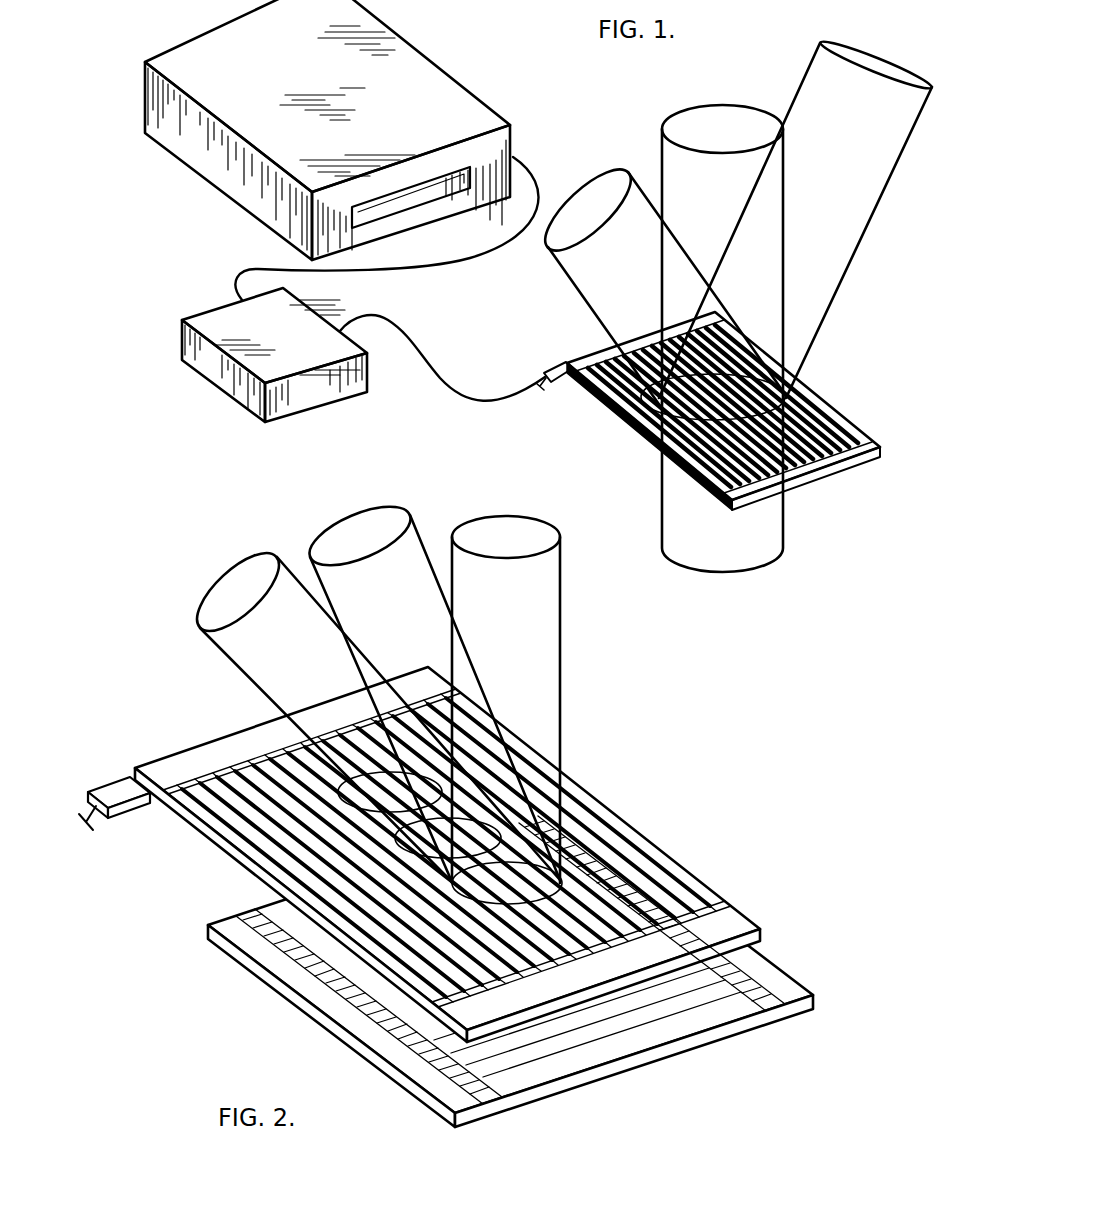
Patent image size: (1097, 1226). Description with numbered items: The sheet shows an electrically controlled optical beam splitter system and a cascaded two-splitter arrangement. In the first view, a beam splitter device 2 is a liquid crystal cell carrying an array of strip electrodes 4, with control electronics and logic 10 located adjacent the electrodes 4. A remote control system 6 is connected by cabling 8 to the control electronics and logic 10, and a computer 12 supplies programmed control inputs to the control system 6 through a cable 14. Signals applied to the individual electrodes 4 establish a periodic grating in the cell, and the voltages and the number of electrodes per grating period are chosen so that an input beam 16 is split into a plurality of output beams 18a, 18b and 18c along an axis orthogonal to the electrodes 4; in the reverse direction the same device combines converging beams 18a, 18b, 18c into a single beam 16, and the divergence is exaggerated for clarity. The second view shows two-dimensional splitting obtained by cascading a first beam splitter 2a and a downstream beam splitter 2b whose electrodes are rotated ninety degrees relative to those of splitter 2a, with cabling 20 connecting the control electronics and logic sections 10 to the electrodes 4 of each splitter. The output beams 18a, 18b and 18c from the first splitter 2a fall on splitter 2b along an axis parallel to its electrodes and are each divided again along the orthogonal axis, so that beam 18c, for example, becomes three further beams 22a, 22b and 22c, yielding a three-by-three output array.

In FIG. 1, the beam splitter device 2 is at (836, 340).
In FIG. 2, the first beam splitter 2a is at (292, 1020).
In FIG. 2, the downstream beam splitter 2b is at (668, 806).
In FIG. 1, the strip electrodes 4 is at (620, 405).
In FIG. 2, the strip electrodes 4 is at (278, 785).
In FIG. 1, the remote control system 6 is at (233, 392).
In FIG. 1, the cabling 8 is at (427, 348).
In FIG. 2, the cabling 8 is at (140, 788).
In FIG. 1, the control electronics and logic 10 is at (842, 452).
In FIG. 2, the control electronics and logic 10 is at (218, 767).
In FIG. 1, the computer 12 is at (204, 150).
In FIG. 1, the cable 14 is at (250, 266).
In FIG. 1, the input beam 16 is at (783, 538).
In FIG. 1, the output beam 18a is at (628, 170).
In FIG. 2, the output beam 18a is at (374, 804).
In FIG. 1, the output beam 18b is at (733, 110).
In FIG. 2, the output beam 18b is at (438, 850).
In FIG. 1, the output beam 18c is at (832, 40).
In FIG. 2, the output beam 18c is at (498, 894).
In FIG. 2, the cabling 20 is at (762, 1002).
In FIG. 2, the output beam 22a is at (260, 590).
In FIG. 2, the output beam 22b is at (338, 540).
In FIG. 2, the output beam 22c is at (568, 585).